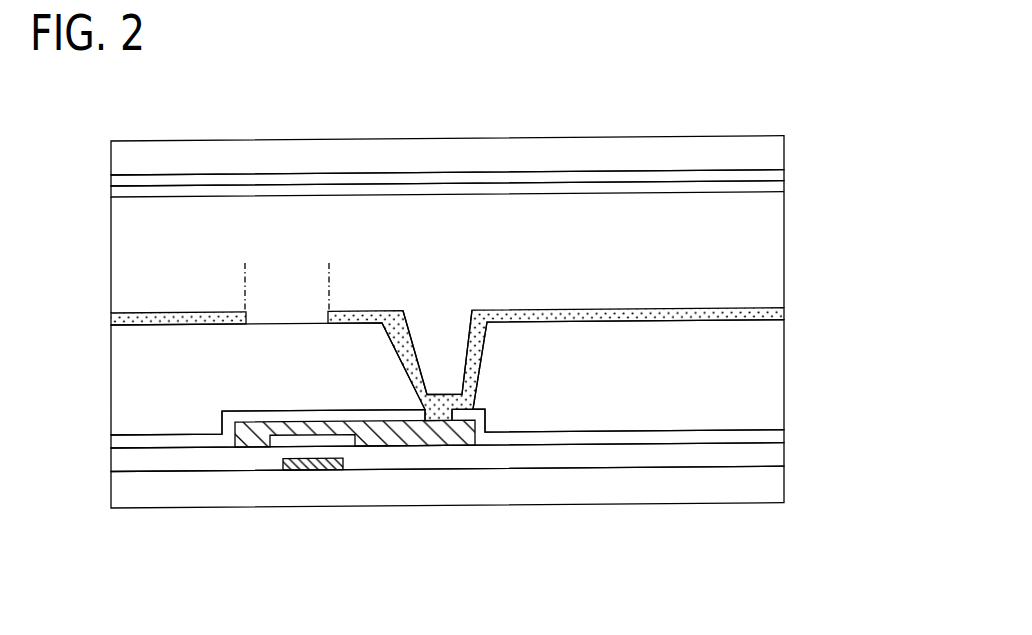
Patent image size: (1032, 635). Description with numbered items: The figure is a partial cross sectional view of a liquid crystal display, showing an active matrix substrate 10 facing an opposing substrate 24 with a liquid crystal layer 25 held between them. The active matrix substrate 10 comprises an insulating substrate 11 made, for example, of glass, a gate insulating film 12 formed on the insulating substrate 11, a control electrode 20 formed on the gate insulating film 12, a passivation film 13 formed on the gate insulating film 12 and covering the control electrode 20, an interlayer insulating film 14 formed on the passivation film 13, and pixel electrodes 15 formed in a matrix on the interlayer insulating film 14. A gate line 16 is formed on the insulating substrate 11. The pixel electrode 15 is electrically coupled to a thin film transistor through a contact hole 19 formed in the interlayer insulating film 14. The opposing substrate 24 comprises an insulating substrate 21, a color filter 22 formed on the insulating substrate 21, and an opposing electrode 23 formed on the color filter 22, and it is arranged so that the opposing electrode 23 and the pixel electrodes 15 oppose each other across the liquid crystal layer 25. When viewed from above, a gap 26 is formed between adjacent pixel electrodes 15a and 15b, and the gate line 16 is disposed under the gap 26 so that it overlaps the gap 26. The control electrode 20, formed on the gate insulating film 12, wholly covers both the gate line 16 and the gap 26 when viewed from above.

The active matrix substrate 10 is at (521, 411).
The insulating substrate 11 is at (489, 487).
The gate insulating film 12 is at (777, 455).
The passivation film 13 is at (777, 435).
The interlayer insulating film 14 is at (777, 371).
The pixel electrodes 15 is at (489, 326).
The pixel electrode 15a is at (610, 310).
The pixel electrode 15b is at (167, 312).
The gate line 16 is at (313, 471).
The contact hole 19 is at (437, 323).
The control electrode 20 is at (437, 437).
The insulating substrate 21 is at (775, 150).
The color filter 22 is at (778, 178).
The opposing electrode 23 is at (487, 205).
The opposing substrate 24 is at (519, 169).
The liquid crystal layer 25 is at (775, 260).
The gap 26 is at (328, 275).